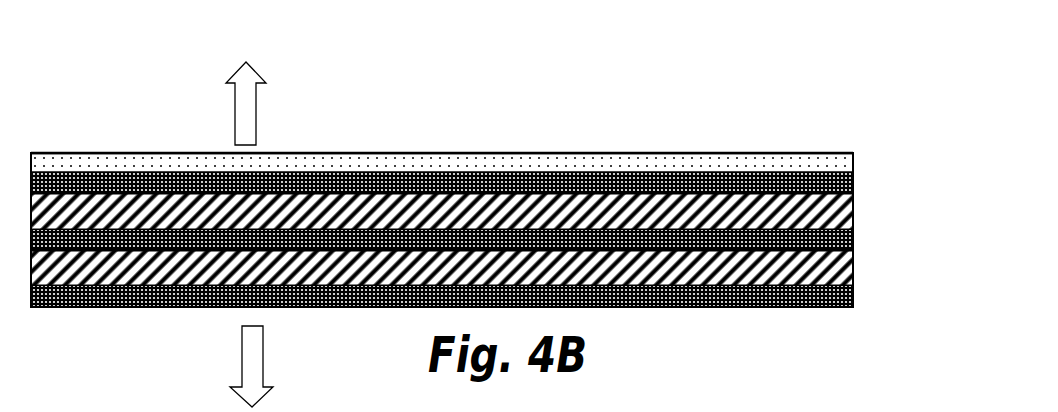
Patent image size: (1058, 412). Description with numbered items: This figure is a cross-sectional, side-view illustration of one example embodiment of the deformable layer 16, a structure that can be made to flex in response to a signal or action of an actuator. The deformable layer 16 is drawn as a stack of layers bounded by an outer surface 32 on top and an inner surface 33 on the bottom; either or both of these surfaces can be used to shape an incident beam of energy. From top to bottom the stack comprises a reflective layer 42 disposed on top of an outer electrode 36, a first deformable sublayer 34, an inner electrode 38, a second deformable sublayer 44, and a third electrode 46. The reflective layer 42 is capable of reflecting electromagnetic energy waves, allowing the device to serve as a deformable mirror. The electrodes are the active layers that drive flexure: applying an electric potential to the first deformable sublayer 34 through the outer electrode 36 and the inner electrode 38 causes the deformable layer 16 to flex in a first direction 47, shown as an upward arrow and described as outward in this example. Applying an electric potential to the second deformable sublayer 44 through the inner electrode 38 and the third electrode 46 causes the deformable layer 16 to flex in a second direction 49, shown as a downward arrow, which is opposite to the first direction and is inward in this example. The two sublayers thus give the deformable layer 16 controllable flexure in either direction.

The deformable layer 16 is at (149, 73).
The outer surface 32 is at (556, 150).
The inner surface 33 is at (656, 308).
The first deformable sublayer 34 is at (853, 212).
The outer electrode 36 is at (853, 180).
The inner electrode 38 is at (853, 243).
The reflective layer 42 is at (812, 152).
The second deformable sublayer 44 is at (853, 275).
The third electrode 46 is at (803, 306).
The first direction 47 is at (257, 117).
The second direction 49 is at (263, 345).